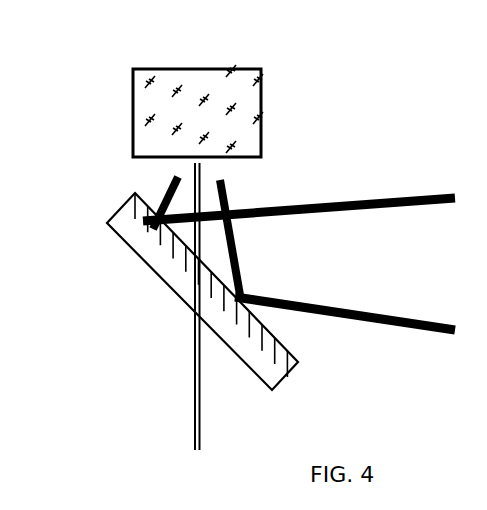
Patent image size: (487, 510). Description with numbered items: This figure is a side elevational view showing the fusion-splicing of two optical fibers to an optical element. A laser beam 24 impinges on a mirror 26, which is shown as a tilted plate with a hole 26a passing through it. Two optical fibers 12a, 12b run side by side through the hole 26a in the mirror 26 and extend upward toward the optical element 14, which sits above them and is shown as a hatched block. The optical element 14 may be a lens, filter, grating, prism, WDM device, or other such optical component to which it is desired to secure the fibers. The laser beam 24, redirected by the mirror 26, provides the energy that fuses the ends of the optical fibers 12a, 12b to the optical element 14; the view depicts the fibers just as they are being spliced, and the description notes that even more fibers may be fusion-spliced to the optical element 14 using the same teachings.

The optical element 14 is at (133, 98).
The laser beam 24 is at (353, 205).
The mirror 26 is at (130, 246).
The hole 26a is at (196, 282).
The first optical fiber 12a is at (194, 405).
The second optical fiber 12b is at (200, 407).